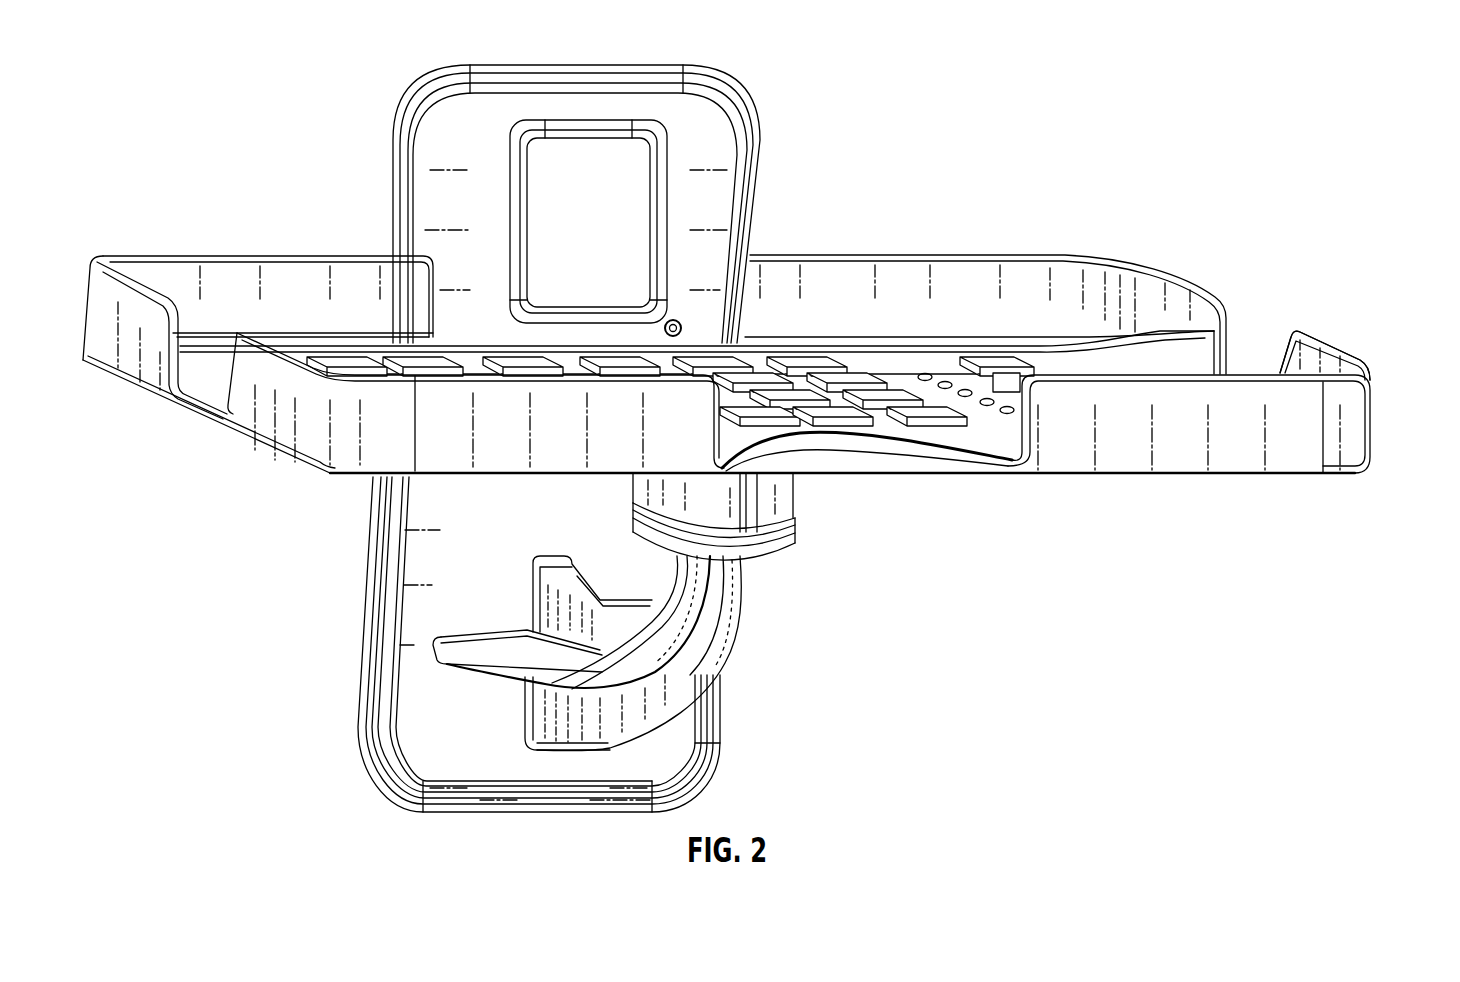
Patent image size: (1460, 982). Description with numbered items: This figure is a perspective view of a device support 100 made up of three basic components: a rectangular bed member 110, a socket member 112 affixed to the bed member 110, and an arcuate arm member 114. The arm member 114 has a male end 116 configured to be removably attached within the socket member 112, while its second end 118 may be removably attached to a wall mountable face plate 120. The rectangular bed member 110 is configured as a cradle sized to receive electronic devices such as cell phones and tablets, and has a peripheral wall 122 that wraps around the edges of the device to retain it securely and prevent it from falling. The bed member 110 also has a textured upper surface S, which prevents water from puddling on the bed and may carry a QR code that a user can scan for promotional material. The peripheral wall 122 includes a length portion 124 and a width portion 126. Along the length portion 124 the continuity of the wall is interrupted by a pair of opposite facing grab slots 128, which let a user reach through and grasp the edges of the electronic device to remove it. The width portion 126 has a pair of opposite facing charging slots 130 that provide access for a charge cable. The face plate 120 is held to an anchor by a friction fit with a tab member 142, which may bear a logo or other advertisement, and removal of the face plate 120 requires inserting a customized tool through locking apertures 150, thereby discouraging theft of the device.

The device support 100 is at (1188, 121).
The rectangular bed member 110 is at (1182, 276).
The socket member 112 is at (797, 487).
The arcuate arm member 114 is at (738, 645).
The male end 116 is at (792, 548).
The second end 118 is at (527, 717).
The wall mountable face plate 120 is at (445, 543).
The peripheral wall 122 is at (1372, 413).
The length portion 124 is at (313, 255).
The width portion 126 is at (1330, 343).
The grab slots 128 is at (773, 258).
The charging slots 130 is at (1258, 340).
The tab member 142 is at (604, 165).
The locking apertures 150 is at (676, 318).
The textured upper surface S is at (298, 345).